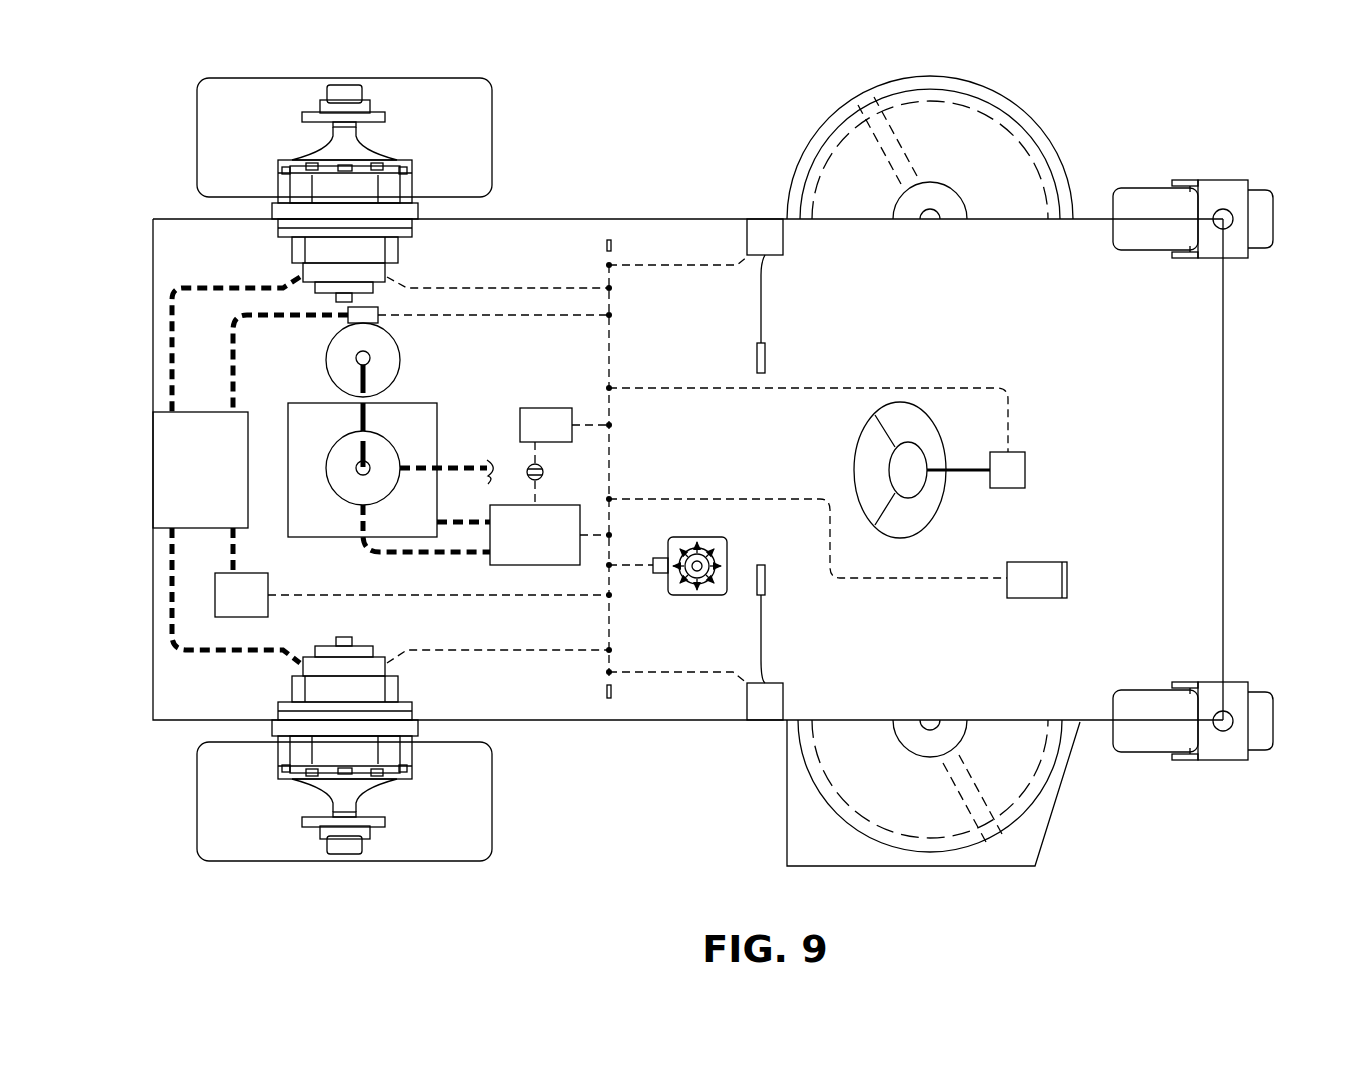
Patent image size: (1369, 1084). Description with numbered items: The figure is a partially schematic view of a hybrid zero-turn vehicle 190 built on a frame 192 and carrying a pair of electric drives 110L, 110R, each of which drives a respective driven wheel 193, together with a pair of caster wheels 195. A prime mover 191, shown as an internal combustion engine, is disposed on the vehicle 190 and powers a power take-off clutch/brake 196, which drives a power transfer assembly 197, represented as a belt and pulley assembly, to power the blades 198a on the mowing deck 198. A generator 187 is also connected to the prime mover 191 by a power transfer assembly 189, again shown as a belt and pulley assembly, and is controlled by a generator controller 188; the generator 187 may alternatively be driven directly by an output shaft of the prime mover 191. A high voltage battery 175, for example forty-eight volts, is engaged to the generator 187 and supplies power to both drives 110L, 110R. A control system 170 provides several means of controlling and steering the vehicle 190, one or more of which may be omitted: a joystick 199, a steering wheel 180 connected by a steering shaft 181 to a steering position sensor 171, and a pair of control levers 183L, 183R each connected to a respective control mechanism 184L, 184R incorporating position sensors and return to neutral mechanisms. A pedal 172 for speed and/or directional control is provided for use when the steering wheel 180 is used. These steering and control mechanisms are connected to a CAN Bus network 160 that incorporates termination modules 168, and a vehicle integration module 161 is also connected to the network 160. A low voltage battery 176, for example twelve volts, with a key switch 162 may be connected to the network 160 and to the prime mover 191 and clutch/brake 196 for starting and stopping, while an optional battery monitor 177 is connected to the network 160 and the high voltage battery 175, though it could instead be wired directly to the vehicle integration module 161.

The hybrid zero-turn vehicle 190 is at (126, 110).
The frame 192 is at (650, 219).
The driven wheel 193 is at (300, 78).
The electric drive 110L is at (260, 172).
The electric drive 110R is at (262, 768).
The CAN Bus network 160 is at (609, 632).
The termination module 168 is at (605, 245).
The generator controller 188 is at (378, 318).
The generator 187 is at (400, 355).
The power transfer assembly 189 is at (352, 378).
The prime mover 191 is at (362, 470).
The power take-off clutch/brake 196 is at (393, 453).
The power transfer assembly 197 is at (478, 468).
The high voltage battery 175 is at (200, 470).
The low voltage battery 176 is at (535, 535).
The battery monitor 177 is at (268, 610).
The vehicle integration module 161 is at (547, 408).
The key switch 162 is at (544, 466).
The joystick 199 is at (727, 548).
The control mechanism 184L is at (783, 237).
The control lever 183L is at (765, 358).
The control mechanism 184R is at (783, 700).
The control lever 183R is at (765, 580).
The control system 170 is at (970, 320).
The steering wheel 180 is at (898, 537).
The steering shaft 181 is at (967, 468).
The steering position sensor 171 is at (1005, 488).
The pedal 172 is at (1035, 598).
The mowing deck 198 is at (925, 72).
The blade 198a is at (900, 148).
The caster wheel 195 is at (1273, 218).